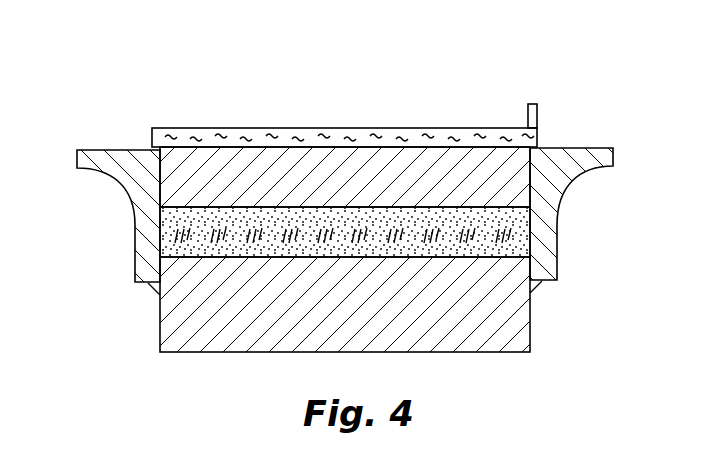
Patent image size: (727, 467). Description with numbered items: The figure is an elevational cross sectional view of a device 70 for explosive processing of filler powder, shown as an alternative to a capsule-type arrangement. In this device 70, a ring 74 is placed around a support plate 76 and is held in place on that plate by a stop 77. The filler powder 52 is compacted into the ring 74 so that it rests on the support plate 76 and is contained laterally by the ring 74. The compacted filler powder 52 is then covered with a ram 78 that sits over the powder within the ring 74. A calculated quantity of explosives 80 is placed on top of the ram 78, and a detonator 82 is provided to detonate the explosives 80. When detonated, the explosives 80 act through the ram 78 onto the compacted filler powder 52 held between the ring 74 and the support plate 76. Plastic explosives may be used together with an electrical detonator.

The device for explosive processing of filler powder 70 is at (148, 88).
The explosives 80 is at (383, 128).
The detonator 82 is at (532, 113).
The ram 78 is at (270, 160).
The filler powder 52 is at (173, 215).
The support plate 76 is at (513, 319).
The ring 74 is at (543, 250).
The stop 77 is at (158, 286).